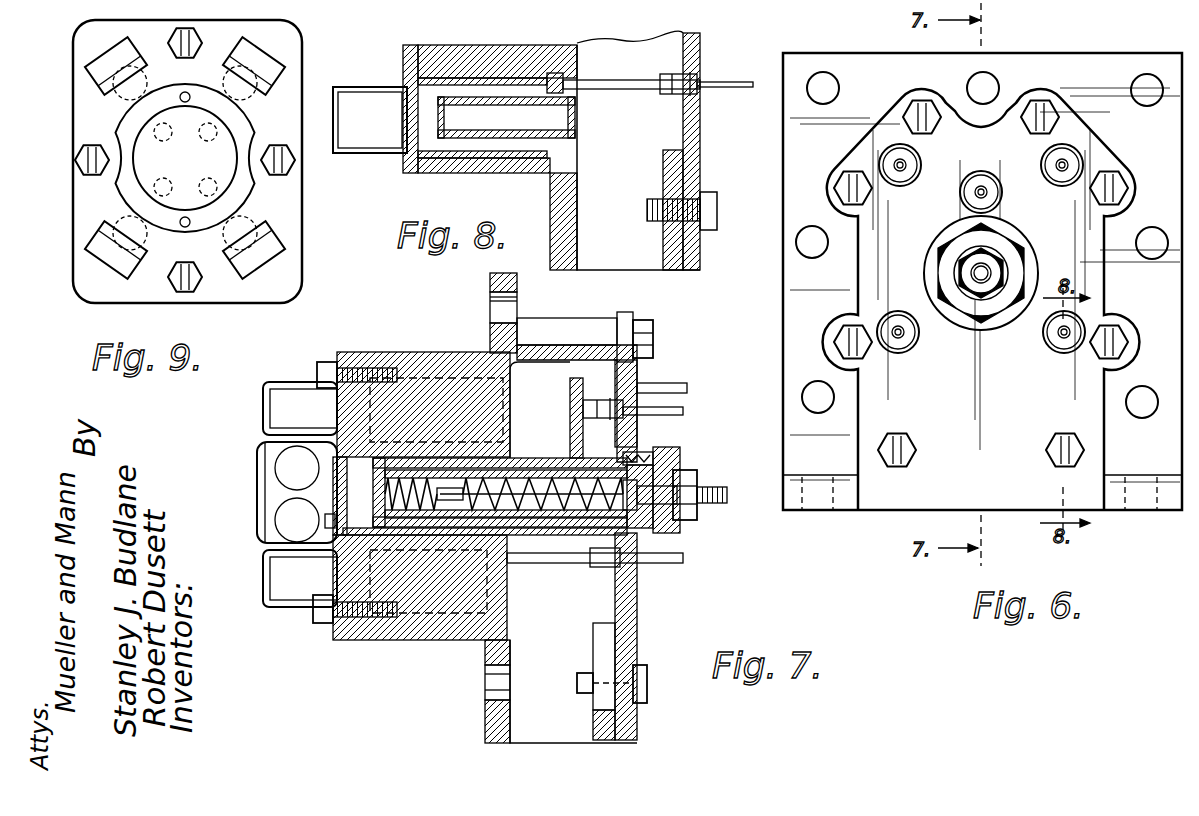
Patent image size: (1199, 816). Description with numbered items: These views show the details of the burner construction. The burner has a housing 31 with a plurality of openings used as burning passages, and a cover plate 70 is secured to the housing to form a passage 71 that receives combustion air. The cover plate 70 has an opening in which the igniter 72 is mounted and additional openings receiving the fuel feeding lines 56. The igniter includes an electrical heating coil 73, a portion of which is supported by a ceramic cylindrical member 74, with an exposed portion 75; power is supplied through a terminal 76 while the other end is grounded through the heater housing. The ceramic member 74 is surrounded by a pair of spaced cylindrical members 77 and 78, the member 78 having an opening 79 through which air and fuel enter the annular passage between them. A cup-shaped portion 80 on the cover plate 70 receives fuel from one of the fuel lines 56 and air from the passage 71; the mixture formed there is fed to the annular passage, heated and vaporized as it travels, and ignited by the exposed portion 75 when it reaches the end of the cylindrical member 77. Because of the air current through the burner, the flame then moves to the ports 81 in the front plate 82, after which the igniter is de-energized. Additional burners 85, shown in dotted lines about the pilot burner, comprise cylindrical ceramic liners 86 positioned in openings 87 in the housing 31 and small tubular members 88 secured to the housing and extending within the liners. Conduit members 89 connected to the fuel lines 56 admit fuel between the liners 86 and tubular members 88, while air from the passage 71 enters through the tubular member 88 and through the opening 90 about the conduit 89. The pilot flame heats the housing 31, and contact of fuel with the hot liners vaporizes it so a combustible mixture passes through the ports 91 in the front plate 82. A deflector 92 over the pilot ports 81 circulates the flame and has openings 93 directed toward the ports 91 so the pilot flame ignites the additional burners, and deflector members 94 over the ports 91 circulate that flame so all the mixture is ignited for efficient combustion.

In FIG. 9, the housing 31 is at (299, 247).
In FIG. 8, the housing 31 is at (557, 170).
In FIG. 7, the housing 31 is at (467, 632).
In FIG. 6, the housing 31 is at (1103, 67).
In FIG. 8, the fuel feeding lines 56 is at (733, 82).
In FIG. 7, the fuel feeding lines 56 is at (680, 382).
In FIG. 6, the fuel feeding lines 56 is at (982, 186).
In FIG. 7, the cover plate 70 is at (630, 614).
In FIG. 6, the cover plate 70 is at (917, 492).
In FIG. 8, the passage 71 is at (638, 257).
In FIG. 7, the passage 71 is at (575, 728).
In FIG. 7, the igniter 72 is at (681, 452).
In FIG. 6, the igniter 72 is at (1013, 256).
In FIG. 7, the electrical heating coil 73 is at (562, 498).
In FIG. 7, the ceramic cylindrical member 74 is at (520, 467).
In FIG. 7, the exposed portion 75 is at (504, 499).
In FIG. 7, the terminal 76 is at (722, 490).
In FIG. 7, the cylindrical member 77 is at (538, 463).
In FIG. 7, the cylindrical member 78 is at (543, 465).
In FIG. 7, the opening 79 is at (600, 463).
In FIG. 7, the cup-shaped portion 80 is at (570, 379).
In FIG. 7, the ports 81 is at (330, 522).
In FIG. 7, the front plate 82 is at (337, 353).
In FIG. 8, the additional burners 85 is at (493, 110).
In FIG. 7, the additional burners 85 is at (427, 412).
In FIG. 8, the cylindrical ceramic liners 86 is at (458, 80).
In FIG. 8, the openings 87 is at (503, 160).
In FIG. 8, the tubular members 88 is at (571, 113).
In FIG. 8, the conduit members 89 is at (640, 82).
In FIG. 8, the opening 90 is at (563, 80).
In FIG. 8, the ports 91 is at (408, 100).
In FIG. 9, the deflector 92 is at (140, 183).
In FIG. 7, the deflector 92 is at (257, 505).
In FIG. 7, the openings 93 is at (280, 453).
In FIG. 9, the deflector members 94 is at (98, 90).
In FIG. 8, the deflector members 94 is at (372, 154).